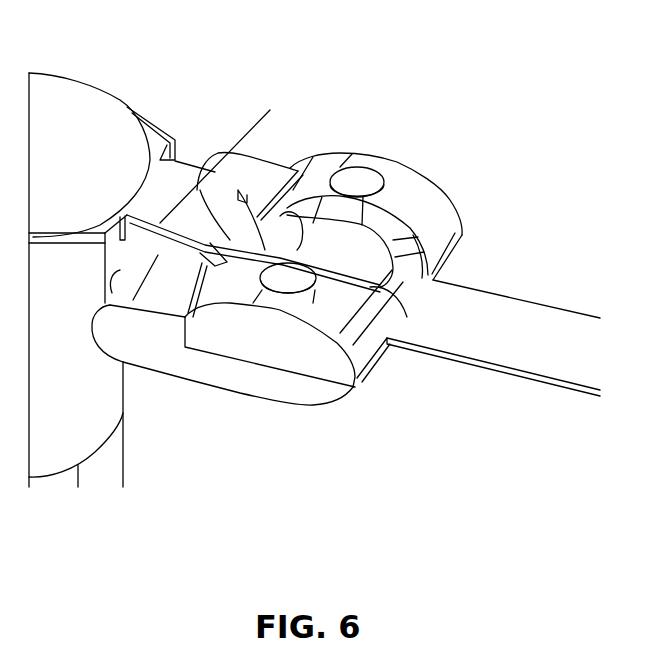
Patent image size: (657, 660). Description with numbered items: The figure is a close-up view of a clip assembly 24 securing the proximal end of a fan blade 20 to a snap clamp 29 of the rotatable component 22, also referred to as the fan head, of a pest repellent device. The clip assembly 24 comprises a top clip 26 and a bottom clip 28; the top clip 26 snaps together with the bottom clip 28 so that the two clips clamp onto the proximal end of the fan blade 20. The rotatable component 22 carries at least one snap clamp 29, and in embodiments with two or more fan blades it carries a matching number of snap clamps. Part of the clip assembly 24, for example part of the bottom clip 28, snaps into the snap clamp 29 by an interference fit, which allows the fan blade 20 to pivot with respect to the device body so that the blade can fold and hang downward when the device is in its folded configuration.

The fan blade 20 is at (488, 317).
The rotatable component 22 is at (70, 110).
The clip assembly 24 is at (400, 87).
The top clip 26 is at (400, 187).
The bottom clip 28 is at (160, 345).
The snap clamp 29 is at (200, 188).